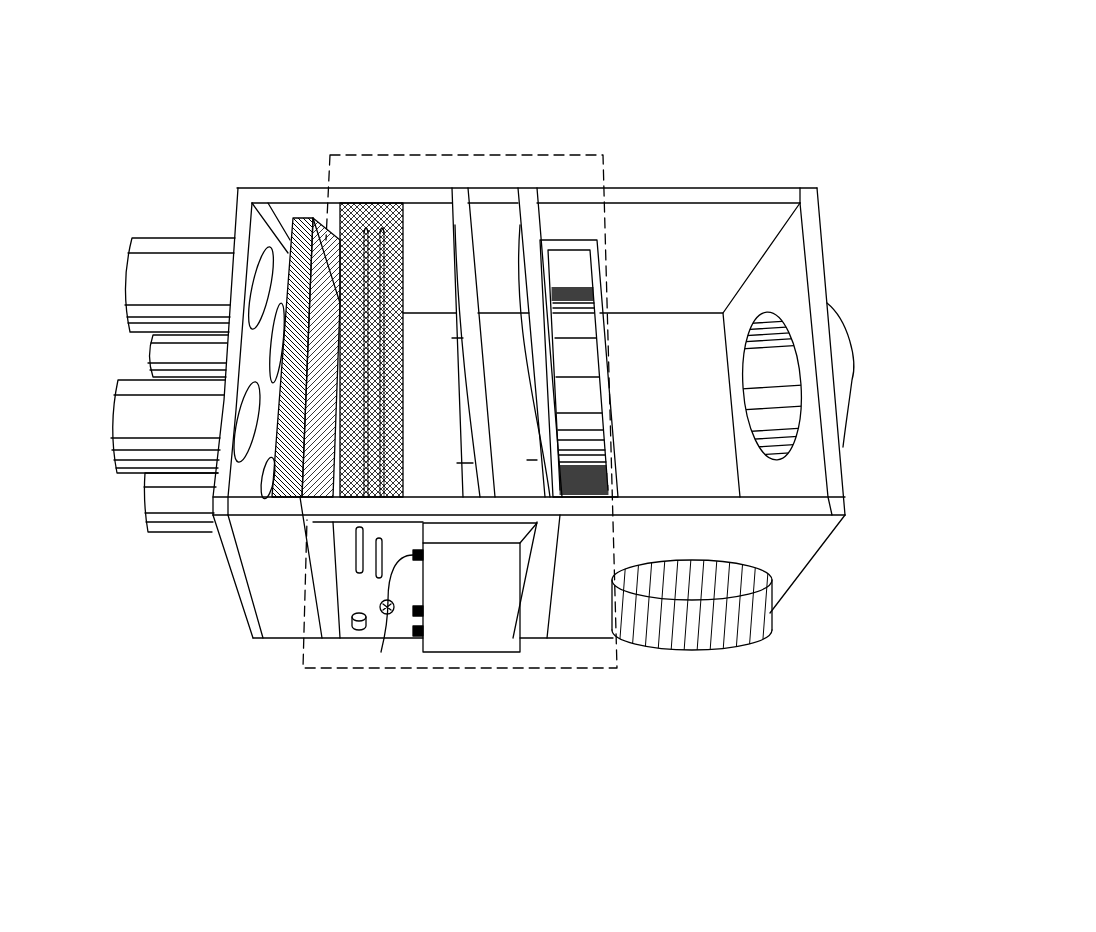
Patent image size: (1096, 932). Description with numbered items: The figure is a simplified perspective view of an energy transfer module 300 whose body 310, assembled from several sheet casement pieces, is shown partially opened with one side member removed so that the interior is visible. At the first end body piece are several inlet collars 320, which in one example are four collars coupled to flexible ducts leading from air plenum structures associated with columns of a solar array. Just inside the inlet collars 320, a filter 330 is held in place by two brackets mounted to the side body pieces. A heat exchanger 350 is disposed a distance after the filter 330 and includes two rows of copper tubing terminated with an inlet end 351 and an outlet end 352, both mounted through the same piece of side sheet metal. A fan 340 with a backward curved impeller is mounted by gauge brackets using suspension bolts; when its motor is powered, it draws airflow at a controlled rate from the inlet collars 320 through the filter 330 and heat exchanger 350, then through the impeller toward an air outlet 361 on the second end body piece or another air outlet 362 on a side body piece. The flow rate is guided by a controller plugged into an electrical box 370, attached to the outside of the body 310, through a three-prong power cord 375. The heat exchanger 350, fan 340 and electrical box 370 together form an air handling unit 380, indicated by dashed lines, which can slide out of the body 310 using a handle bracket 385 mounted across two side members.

The energy transfer module 300 is at (604, 88).
The body 310 is at (608, 185).
The inlet collars 320 is at (150, 402).
The filter 330 is at (303, 218).
The fan 340 is at (567, 373).
The heat exchanger 350 is at (391, 220).
The inlet end 351 is at (355, 553).
The outlet end 352 is at (376, 573).
The air outlet 361 is at (815, 386).
The air outlet 362 is at (752, 590).
The electrical box 370 is at (444, 587).
The 3-prong power cord 375 is at (389, 615).
The air handling unit 380 is at (555, 670).
The handle bracket 385 is at (465, 250).